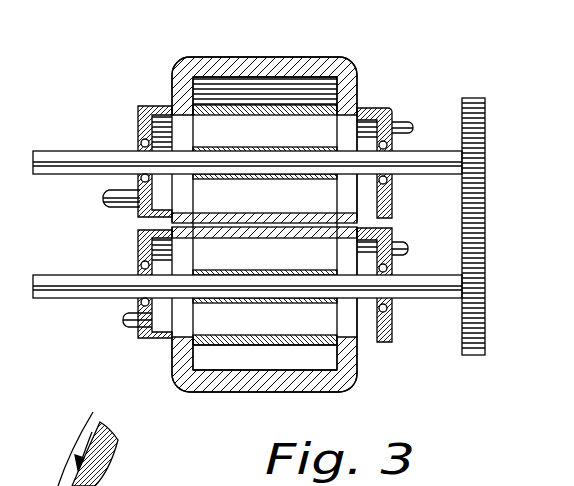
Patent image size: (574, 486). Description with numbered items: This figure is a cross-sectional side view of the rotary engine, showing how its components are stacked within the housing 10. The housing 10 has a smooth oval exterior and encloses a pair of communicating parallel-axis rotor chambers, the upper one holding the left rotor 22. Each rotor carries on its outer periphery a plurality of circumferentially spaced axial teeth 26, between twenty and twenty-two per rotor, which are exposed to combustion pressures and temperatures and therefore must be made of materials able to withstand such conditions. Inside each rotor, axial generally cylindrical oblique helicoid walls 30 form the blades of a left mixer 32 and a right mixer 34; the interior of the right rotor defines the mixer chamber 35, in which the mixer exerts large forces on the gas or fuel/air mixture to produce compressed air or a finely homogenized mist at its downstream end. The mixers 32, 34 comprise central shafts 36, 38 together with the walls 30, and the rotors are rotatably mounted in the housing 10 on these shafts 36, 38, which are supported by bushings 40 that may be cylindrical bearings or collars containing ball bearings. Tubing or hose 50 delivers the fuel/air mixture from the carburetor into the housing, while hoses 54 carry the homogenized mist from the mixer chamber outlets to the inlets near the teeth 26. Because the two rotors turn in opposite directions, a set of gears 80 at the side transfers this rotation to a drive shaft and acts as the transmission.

The housing 10 is at (297, 65).
The left rotor 22 is at (392, 188).
The axial teeth 26 is at (368, 140).
The oblique helicoid walls 30 is at (315, 200).
The left mixer 32 is at (227, 135).
The right mixer 34 is at (208, 245).
The mixer chamber 35 is at (97, 0).
The central shaft 36 is at (424, 160).
The central shaft 38 is at (410, 285).
The bushings 40 is at (137, 143).
The tubing or hose 50 is at (395, 118).
The hoses 54 is at (103, 195).
The set of gears 80 is at (470, 98).